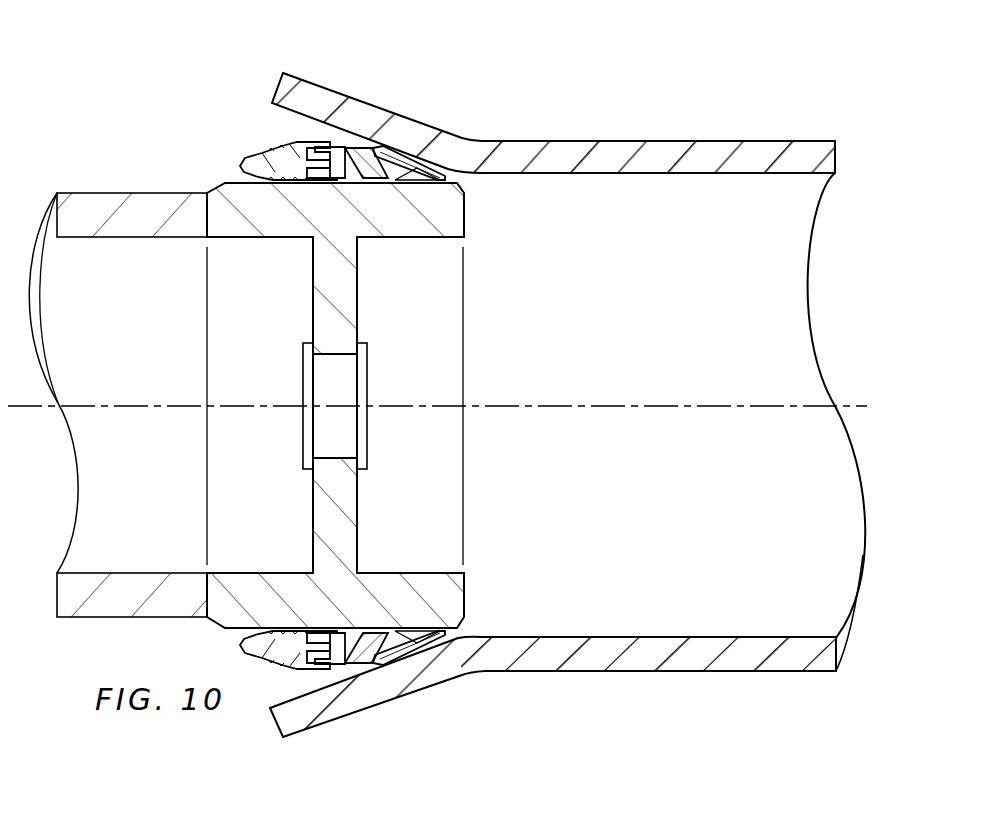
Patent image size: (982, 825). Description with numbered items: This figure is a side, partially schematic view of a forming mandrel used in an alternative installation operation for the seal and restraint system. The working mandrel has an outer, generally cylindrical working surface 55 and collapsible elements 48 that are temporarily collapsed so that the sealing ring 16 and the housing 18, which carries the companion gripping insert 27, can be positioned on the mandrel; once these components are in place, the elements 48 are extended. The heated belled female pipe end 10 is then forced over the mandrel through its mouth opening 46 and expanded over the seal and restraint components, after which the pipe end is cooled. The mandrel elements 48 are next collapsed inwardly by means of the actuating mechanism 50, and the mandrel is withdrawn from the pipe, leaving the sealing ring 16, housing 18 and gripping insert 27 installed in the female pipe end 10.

The belled female pipe end 10 is at (725, 138).
The sealing ring 16 is at (378, 146).
The housing 18 is at (248, 160).
The companion gripping insert 27 is at (285, 170).
The mouth opening 46 is at (134, 319).
The collapsible elements 48 is at (235, 229).
The actuating mechanism 50 is at (369, 379).
The working surface 55 is at (110, 192).